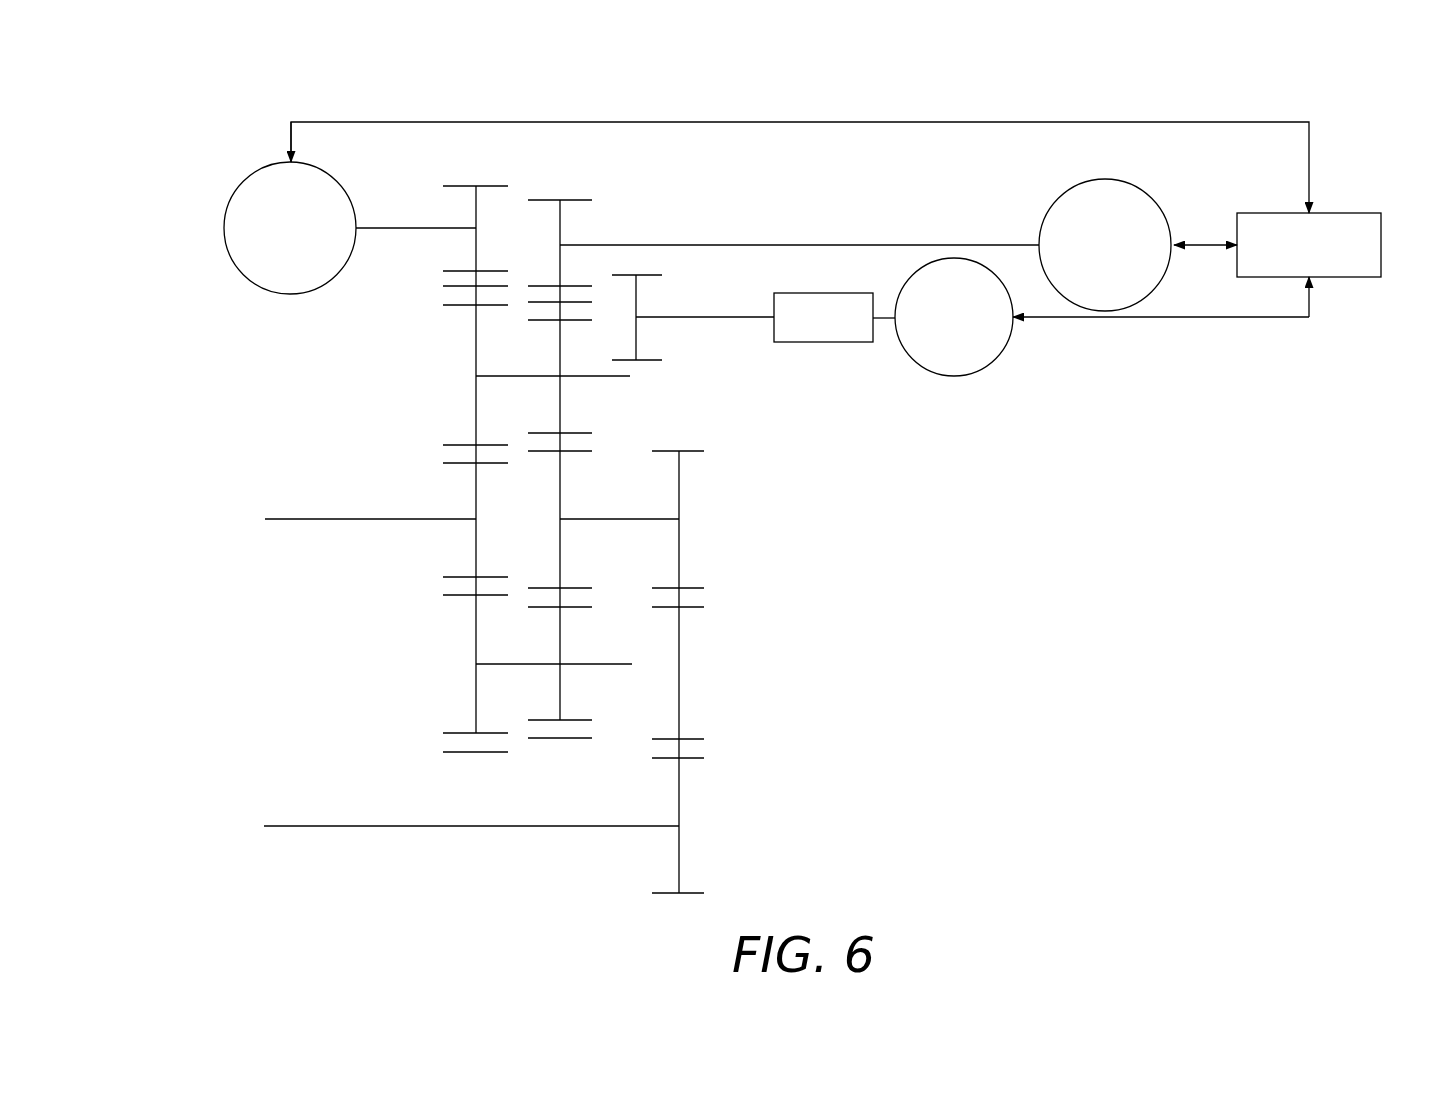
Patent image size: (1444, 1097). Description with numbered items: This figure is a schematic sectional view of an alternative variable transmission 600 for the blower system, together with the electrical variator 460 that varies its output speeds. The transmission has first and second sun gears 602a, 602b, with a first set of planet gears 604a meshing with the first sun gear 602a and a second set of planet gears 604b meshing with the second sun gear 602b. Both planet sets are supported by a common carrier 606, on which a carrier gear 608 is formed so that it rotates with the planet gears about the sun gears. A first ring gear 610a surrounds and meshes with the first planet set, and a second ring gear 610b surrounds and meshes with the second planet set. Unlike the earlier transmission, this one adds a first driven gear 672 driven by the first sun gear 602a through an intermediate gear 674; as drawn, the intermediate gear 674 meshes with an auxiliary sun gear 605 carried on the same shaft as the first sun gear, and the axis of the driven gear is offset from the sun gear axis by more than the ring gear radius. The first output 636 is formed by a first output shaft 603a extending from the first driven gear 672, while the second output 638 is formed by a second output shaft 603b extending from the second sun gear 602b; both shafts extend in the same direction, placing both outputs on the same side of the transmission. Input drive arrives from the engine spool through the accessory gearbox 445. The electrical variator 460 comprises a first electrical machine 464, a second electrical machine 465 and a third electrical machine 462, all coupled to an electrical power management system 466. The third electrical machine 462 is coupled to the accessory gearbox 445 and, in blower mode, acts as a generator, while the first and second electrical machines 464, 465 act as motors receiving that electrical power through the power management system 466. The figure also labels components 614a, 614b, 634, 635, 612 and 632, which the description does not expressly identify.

The electrical variator 460 is at (1318, 78).
The variable transmission 600 is at (240, 339).
The second electrical machine 465 is at (245, 179).
The motor shaft 635 is at (388, 229).
The clutch 614b is at (467, 186).
The clutch 614a is at (573, 200).
The input shaft 634 is at (683, 245).
The brake 612 is at (637, 336).
The carrier gear 608 is at (619, 390).
The carrier shaft 632 is at (626, 377).
The second set of planet gears 604b is at (476, 402).
The first set of planet gears 604a is at (561, 407).
The first sun gear 602a is at (561, 487).
The second sun gear 602b is at (476, 553).
The second output 638 is at (398, 502).
The second output shaft 603b is at (293, 519).
The auxiliary sun gear 605 is at (680, 548).
The intermediate gear 674 is at (680, 624).
The common carrier 606 is at (590, 665).
The second ring gear 610b is at (472, 752).
The first ring gear 610a is at (556, 740).
The first driven gear 672 is at (680, 802).
The first output shaft 603a is at (434, 848).
The first output 636 is at (380, 826).
The accessory gearbox 445 is at (841, 331).
The third electrical machine 462 is at (955, 377).
The first electrical machine 464 is at (1100, 180).
The electrical power management system 466 is at (1327, 261).